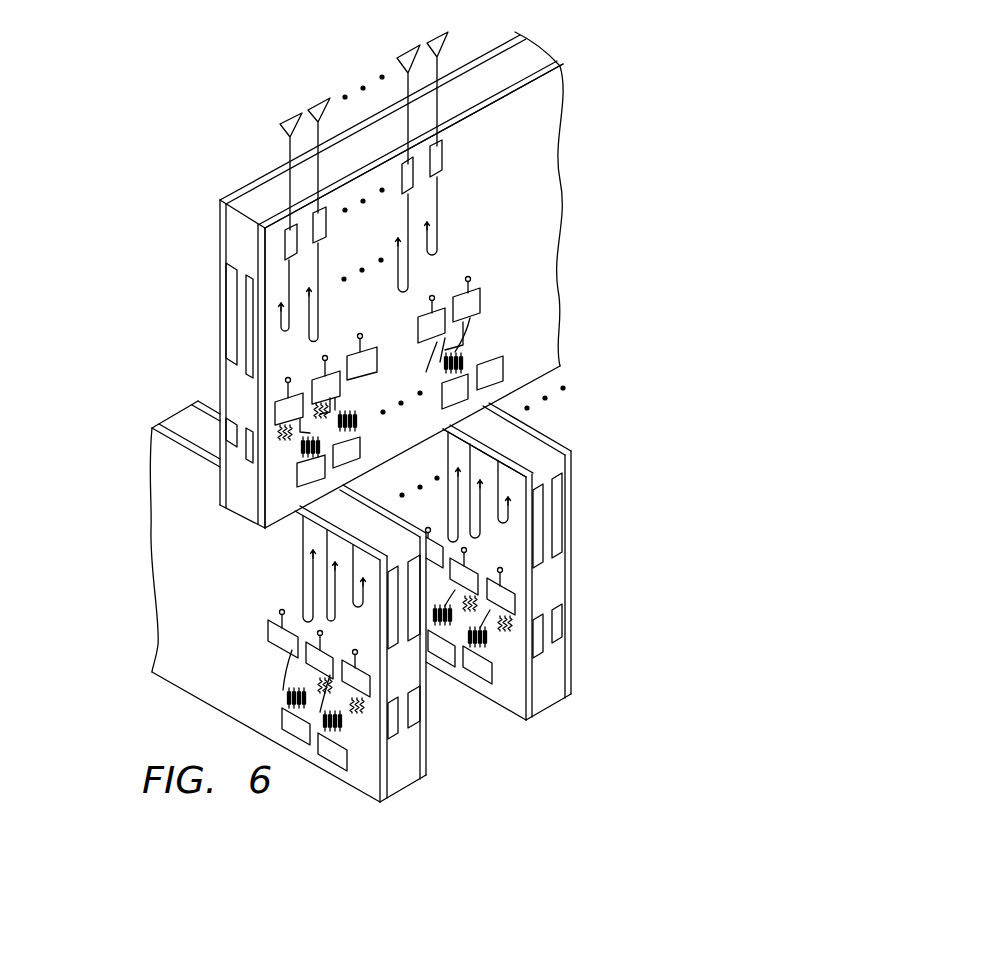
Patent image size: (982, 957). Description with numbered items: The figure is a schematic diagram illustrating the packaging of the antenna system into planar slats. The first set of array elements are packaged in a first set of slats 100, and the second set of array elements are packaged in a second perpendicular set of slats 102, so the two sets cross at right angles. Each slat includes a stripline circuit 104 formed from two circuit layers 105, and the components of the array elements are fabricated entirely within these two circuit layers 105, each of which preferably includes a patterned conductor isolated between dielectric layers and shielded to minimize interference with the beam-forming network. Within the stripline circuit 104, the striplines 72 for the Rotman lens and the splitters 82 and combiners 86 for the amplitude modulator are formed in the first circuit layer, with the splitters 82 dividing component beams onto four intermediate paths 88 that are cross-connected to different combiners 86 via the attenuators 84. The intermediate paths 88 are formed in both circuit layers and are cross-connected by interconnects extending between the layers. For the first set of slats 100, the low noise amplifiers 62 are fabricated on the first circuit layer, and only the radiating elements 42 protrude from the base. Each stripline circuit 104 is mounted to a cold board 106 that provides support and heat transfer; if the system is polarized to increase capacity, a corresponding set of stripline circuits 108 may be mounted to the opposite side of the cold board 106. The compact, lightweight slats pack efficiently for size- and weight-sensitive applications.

The radiating elements 42 is at (281, 101).
The low noise amplifiers 62 is at (440, 157).
The striplines 72 is at (437, 197).
The splitters 82 is at (478, 287).
The attenuators 84 is at (300, 456).
The combiners 86 is at (503, 362).
The intermediate paths 88 is at (472, 350).
The first set of slats 100 is at (192, 287).
The second perpendicular set of slats 102 is at (632, 595).
The stripline circuit 104 is at (206, 319).
The circuit layers 105 is at (230, 433).
The cold board 106 is at (248, 213).
The corresponding set of stripline circuits 108 is at (218, 221).